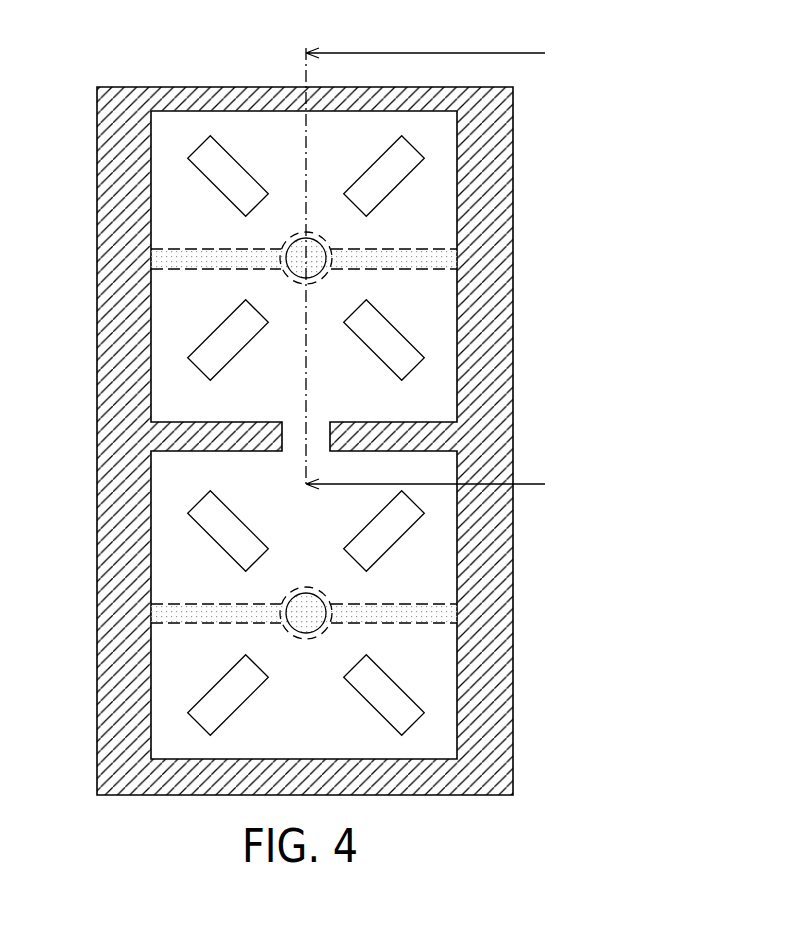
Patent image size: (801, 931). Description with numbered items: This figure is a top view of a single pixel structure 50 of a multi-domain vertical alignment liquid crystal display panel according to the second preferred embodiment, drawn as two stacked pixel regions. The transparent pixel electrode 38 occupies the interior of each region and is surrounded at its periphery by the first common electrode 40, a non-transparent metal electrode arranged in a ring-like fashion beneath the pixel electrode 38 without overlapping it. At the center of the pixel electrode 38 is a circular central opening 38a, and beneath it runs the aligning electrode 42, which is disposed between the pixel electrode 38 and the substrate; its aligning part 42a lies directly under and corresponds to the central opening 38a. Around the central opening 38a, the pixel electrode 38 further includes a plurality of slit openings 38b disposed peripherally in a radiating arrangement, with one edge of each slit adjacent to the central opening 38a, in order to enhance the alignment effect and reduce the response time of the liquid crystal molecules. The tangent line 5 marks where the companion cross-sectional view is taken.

The tangent line 5 is at (437, 268).
The pixel electrode 38 is at (389, 381).
The central opening 38a is at (329, 281).
The slit opening 38b is at (398, 350).
The first common electrode 40 is at (490, 153).
The aligning electrode 42 is at (423, 256).
The aligning part 42a is at (310, 249).
The pixel structure 50 is at (433, 407).